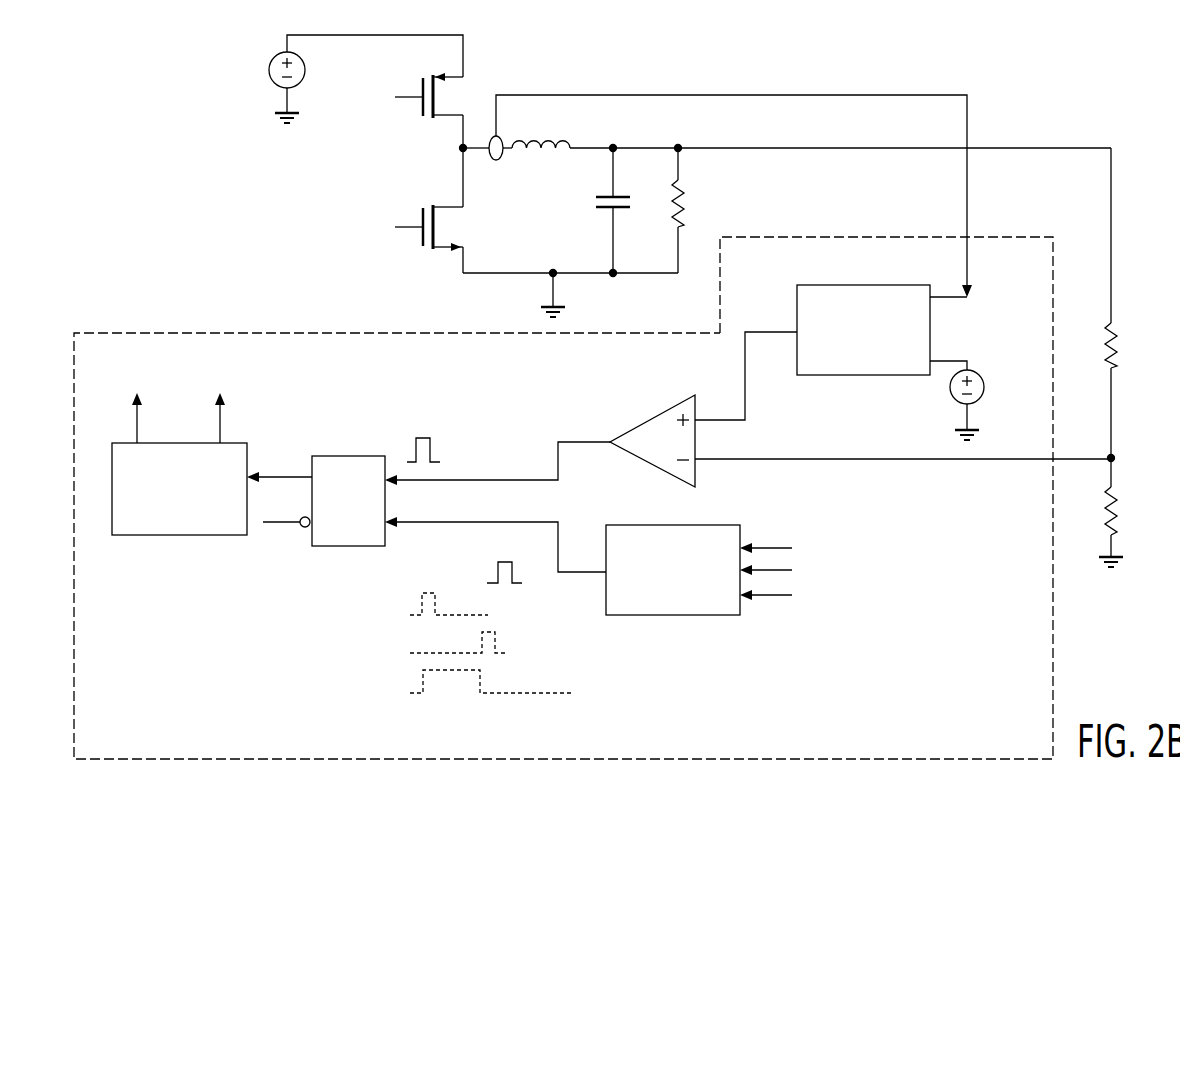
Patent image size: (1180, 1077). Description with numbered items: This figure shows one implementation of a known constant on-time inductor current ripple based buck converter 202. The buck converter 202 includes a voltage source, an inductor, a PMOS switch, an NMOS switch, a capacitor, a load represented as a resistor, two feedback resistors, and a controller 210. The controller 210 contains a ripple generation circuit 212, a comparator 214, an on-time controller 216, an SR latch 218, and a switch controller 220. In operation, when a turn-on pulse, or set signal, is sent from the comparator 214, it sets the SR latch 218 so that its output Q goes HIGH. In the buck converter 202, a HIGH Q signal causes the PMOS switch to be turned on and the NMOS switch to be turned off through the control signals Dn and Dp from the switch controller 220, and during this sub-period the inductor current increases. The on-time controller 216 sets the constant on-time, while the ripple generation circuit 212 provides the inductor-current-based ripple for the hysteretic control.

The constant on-time inductor current ripple based buck converter 202 is at (1145, 74).
The controller 210 is at (1053, 622).
The ripple generation circuit 212 is at (885, 377).
The comparator 214 is at (651, 416).
The on-time controller 216 is at (685, 615).
The SR latch 218 is at (348, 455).
The switch controller 220 is at (178, 535).